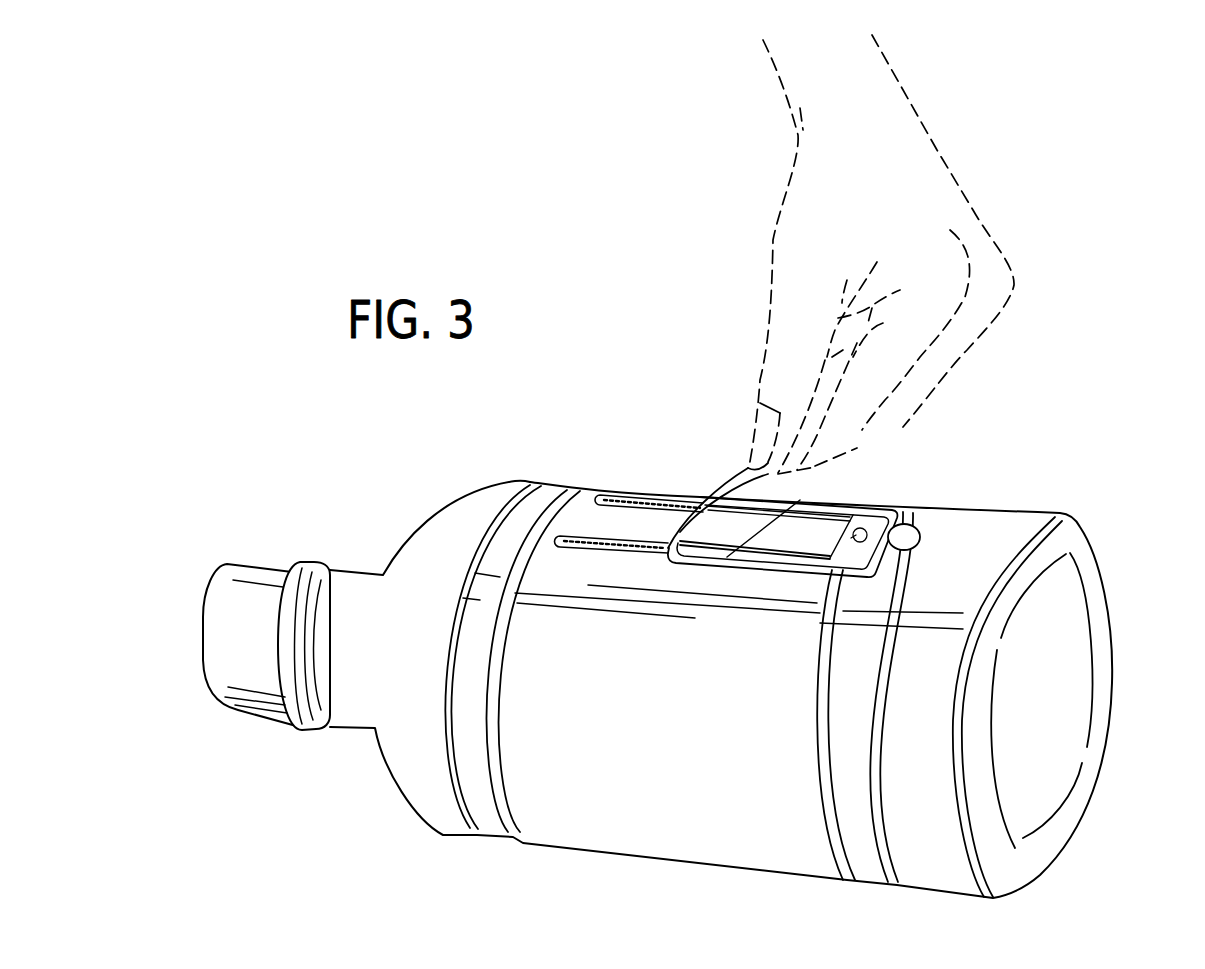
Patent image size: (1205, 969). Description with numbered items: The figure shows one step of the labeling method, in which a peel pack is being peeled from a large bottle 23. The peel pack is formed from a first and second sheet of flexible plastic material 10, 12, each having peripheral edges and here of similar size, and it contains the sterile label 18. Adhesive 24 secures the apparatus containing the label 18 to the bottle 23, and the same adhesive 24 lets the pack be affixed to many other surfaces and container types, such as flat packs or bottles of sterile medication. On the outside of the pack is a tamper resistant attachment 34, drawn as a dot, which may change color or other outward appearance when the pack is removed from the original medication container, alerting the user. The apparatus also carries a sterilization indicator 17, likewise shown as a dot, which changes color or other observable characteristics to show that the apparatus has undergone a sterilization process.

The first sheet of flexible plastic material 10 is at (847, 492).
The second sheet of flexible plastic material 12 is at (840, 503).
The sterilization indicator 17 is at (828, 570).
The label 18 is at (857, 503).
The large bottle 23 is at (1077, 628).
The adhesive 24 is at (660, 500).
The tamper resistant attachment 34 is at (918, 526).